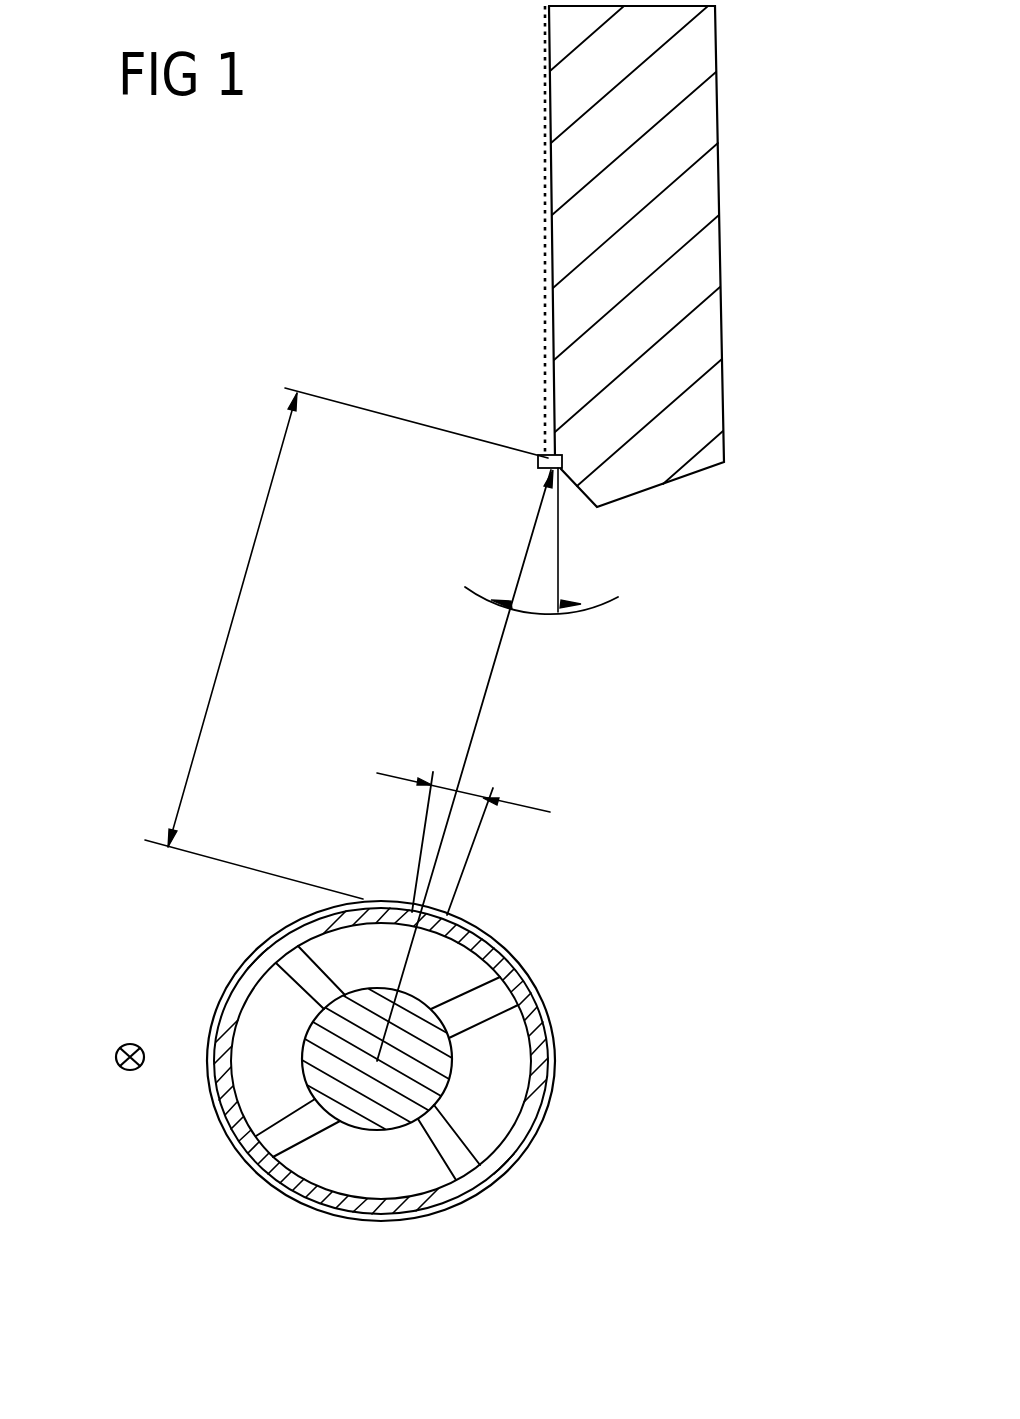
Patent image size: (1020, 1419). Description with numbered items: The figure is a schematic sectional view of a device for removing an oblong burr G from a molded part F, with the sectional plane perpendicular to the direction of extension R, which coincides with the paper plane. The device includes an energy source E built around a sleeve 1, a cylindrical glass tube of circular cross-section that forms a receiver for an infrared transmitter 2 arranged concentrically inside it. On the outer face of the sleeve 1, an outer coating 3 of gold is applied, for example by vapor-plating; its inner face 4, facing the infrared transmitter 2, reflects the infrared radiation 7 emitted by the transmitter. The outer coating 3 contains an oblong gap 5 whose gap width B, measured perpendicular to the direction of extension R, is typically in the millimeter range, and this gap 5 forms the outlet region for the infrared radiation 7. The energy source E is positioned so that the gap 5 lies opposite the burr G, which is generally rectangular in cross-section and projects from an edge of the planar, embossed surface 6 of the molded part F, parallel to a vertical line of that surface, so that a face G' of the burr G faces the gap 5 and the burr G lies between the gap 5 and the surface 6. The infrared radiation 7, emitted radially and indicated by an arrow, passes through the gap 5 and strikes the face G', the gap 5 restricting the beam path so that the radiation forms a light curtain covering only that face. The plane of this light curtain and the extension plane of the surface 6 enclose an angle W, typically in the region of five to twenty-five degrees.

The sleeve 1 is at (472, 1180).
The infrared transmitter 2 is at (447, 1040).
The outer coating 3 is at (548, 1110).
The inner face 4 is at (322, 1205).
The gap 5 is at (407, 907).
The embossed surface 6 is at (543, 228).
The infrared radiation 7 is at (478, 688).
The molded part F is at (815, 122).
The burr G is at (478, 460).
The face of the burr G' is at (471, 513).
The angle W is at (527, 610).
The gap width B is at (467, 792).
The energy source E is at (172, 1215).
The direction of extension R is at (128, 1081).